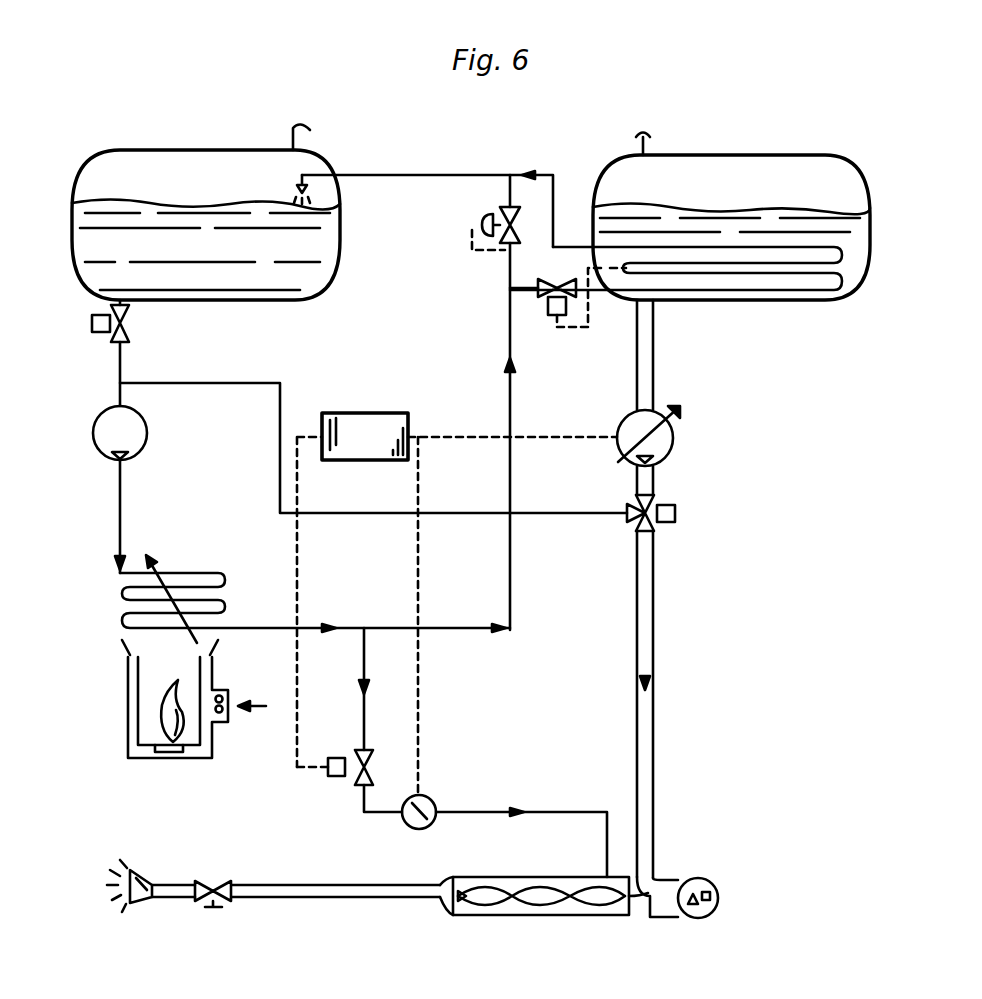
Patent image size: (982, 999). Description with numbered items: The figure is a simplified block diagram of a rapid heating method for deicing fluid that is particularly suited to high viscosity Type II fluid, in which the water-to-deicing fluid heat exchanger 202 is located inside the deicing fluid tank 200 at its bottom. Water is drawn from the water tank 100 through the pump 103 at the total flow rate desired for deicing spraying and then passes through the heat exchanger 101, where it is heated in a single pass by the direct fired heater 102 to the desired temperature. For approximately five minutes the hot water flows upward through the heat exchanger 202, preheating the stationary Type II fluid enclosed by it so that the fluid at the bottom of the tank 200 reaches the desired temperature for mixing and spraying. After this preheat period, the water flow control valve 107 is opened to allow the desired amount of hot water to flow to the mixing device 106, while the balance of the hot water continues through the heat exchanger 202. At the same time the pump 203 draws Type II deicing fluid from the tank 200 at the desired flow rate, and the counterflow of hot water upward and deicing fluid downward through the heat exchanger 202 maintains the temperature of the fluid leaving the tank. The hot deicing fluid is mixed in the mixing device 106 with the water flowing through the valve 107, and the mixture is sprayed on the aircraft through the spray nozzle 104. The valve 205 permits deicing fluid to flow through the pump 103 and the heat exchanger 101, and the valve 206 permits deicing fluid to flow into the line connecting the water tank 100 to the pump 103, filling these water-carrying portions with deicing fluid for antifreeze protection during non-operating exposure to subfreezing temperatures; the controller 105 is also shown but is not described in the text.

The water tank 100 is at (250, 150).
The heat exchanger 101 is at (118, 598).
The direct fired heater 102 is at (128, 712).
The pump 103 is at (98, 448).
The spray nozzle 104 is at (118, 888).
The controller 105 is at (408, 413).
The mixing device 106 is at (455, 915).
The water flow control valve 107 is at (373, 770).
The deicing fluid tank 200 is at (812, 112).
The water-to-deicing fluid heat exchanger 202 is at (845, 292).
The pump 203 is at (672, 428).
The valve 205 is at (675, 513).
The valve 206 is at (92, 325).